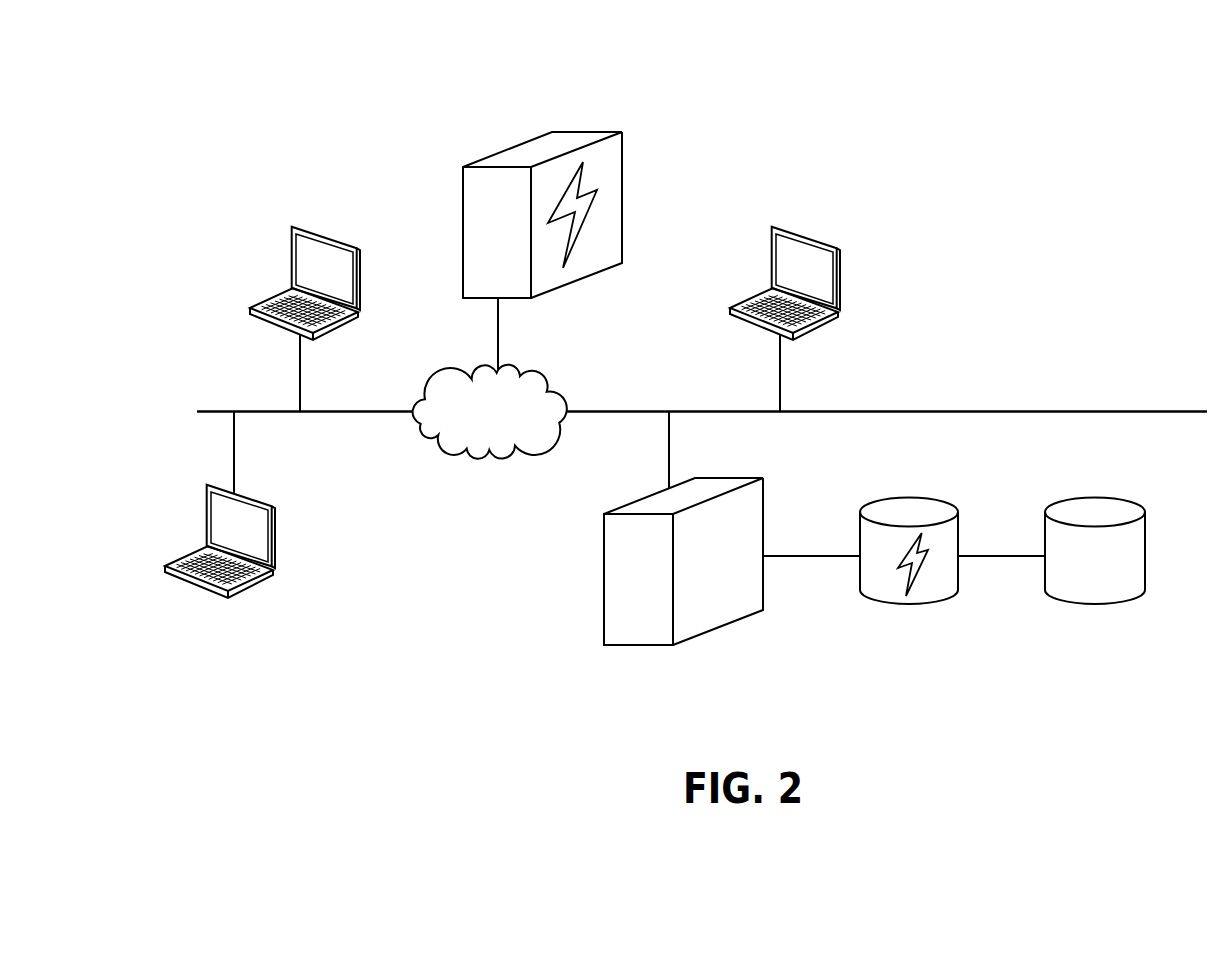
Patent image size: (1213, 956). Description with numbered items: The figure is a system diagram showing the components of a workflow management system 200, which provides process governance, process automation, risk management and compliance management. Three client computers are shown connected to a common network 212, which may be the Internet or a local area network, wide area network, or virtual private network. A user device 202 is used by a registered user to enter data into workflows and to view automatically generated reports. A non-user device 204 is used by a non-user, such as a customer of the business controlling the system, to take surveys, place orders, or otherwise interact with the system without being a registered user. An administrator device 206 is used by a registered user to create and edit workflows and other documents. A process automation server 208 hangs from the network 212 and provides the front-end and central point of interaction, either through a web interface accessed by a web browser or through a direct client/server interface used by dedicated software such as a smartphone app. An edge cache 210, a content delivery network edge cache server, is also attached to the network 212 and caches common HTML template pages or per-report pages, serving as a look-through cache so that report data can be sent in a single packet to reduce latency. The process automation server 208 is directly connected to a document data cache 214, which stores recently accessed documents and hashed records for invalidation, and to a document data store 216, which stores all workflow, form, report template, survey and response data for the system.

The system 200 is at (1104, 139).
The user device 202 is at (238, 597).
The non-user device 204 is at (337, 237).
The administrator device 206 is at (817, 237).
The process automation server 208 is at (662, 645).
The edge cache 210 is at (578, 131).
The network 212 is at (447, 457).
The document data cache 214 is at (913, 605).
The document data store 216 is at (1095, 607).